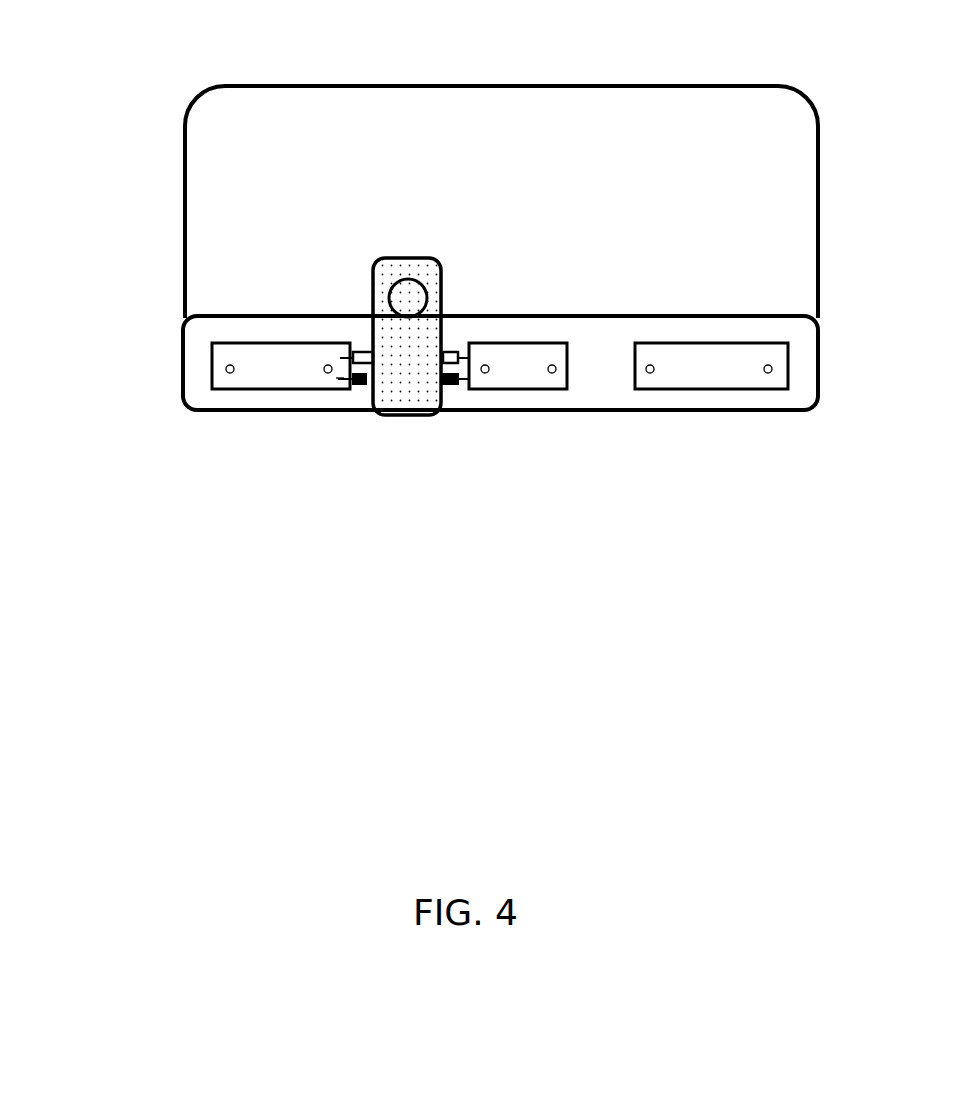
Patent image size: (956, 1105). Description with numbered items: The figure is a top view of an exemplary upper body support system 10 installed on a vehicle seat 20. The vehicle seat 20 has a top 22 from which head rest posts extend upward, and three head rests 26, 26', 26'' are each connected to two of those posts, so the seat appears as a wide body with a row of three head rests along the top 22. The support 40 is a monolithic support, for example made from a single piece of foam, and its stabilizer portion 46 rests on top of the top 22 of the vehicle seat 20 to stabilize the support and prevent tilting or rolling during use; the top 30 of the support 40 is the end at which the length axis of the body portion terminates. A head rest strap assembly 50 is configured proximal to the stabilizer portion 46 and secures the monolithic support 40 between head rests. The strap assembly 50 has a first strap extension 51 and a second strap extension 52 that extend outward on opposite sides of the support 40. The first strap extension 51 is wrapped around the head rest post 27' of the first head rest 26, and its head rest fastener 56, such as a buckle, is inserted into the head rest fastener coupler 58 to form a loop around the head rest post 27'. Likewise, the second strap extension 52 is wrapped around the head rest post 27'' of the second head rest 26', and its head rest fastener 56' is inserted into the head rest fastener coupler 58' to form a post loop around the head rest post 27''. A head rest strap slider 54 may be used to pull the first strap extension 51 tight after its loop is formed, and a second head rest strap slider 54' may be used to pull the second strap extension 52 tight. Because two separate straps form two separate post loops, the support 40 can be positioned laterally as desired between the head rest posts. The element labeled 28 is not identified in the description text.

The upper body support system 10 is at (312, 207).
The vehicle seat 20 is at (183, 270).
The top 22 is at (250, 398).
The first head rest 26 is at (275, 314).
The second head rest 26' is at (558, 327).
The third head rest 26'' is at (711, 303).
The head rest post 27' is at (284, 319).
The head rest post 27'' is at (541, 319).
The upper housing portion 28 is at (532, 130).
The top of the support 30 is at (397, 268).
The support 40 is at (441, 265).
The stabilizer portion 46 is at (372, 330).
The head rest strap assembly 50 is at (367, 397).
The first strap extension 51 is at (340, 380).
The second strap extension 52 is at (484, 372).
The head rest strap slider 54 is at (335, 442).
The head rest strap slider 54' is at (473, 434).
The head rest fastener 56 is at (327, 312).
The head rest fastener 56' is at (482, 321).
The head rest fastener coupler 58 is at (339, 302).
The head rest fastener coupler 58' is at (463, 309).